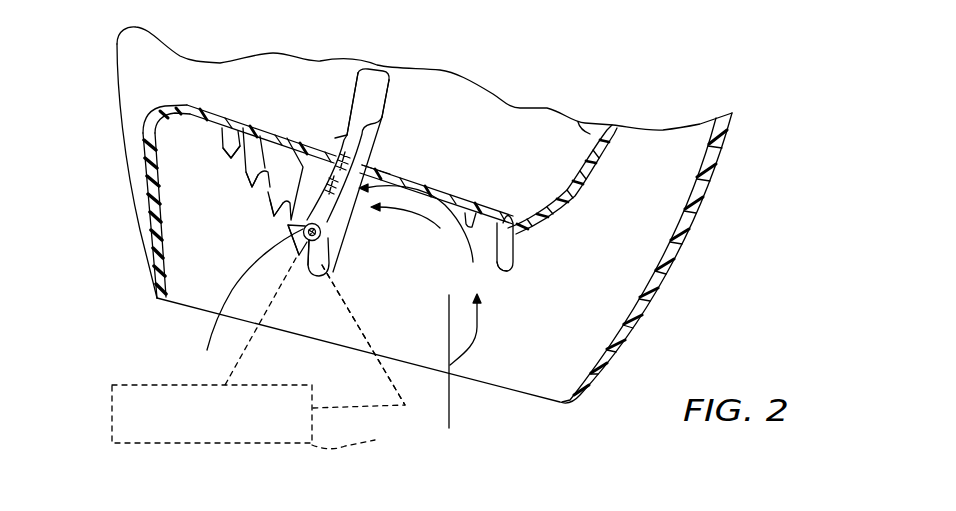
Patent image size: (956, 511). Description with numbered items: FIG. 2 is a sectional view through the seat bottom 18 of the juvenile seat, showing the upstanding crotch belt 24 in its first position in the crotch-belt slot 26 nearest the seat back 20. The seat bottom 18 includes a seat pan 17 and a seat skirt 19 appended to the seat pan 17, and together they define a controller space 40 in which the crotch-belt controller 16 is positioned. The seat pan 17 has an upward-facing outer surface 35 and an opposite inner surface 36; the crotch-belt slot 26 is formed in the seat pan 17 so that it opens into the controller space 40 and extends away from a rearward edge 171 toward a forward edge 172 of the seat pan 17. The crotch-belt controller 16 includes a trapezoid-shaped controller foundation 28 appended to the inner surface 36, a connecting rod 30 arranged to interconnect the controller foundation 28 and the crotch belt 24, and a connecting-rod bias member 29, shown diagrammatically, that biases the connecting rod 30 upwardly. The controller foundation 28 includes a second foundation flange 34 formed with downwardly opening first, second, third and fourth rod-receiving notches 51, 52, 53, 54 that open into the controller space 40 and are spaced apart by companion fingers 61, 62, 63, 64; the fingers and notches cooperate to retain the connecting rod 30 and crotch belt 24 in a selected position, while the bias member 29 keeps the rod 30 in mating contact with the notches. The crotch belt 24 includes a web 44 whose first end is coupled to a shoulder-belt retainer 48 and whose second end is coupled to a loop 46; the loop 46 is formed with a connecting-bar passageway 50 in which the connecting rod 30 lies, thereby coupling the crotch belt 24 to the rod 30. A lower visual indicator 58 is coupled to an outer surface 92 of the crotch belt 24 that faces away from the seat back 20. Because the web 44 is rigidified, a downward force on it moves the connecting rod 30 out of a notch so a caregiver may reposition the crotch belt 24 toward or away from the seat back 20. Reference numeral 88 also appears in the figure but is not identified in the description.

The crotch-belt controller 16 is at (450, 362).
The seat pan 17 is at (447, 194).
The seat bottom 18 is at (144, 232).
The seat skirt 19 is at (147, 250).
The seat back 20 is at (702, 213).
The crotch belt 24 is at (413, 179).
The crotch-belt slot 26 is at (390, 163).
The controller foundation 28 is at (424, 274).
The connecting-rod bias member 29 is at (449, 428).
The connecting rod 30 is at (449, 295).
The second foundation flange 34 is at (348, 207).
The outer surface 35 is at (514, 244).
The inner surface 36 is at (474, 212).
The controller space 40 is at (395, 301).
The web 44 is at (368, 162).
The loop 46 is at (328, 278).
The shoulder-belt retainer 48 is at (377, 93).
The connecting-bar passageway 50 is at (321, 233).
The first rod-receiving notch 51 is at (311, 244).
The second rod-receiving notch 52 is at (303, 167).
The third rod-receiving notch 53 is at (268, 145).
The fourth rod-receiving notch 54 is at (246, 135).
The lower visual indicator 58 is at (335, 138).
The finger 61 is at (285, 233).
The finger 62 is at (268, 193).
The finger 63 is at (246, 174).
The finger 64 is at (222, 143).
The top edge 88 is at (578, 122).
The outer surface 92 is at (258, 334).
The rearward edge 171 is at (500, 265).
The forward edge 172 is at (143, 132).